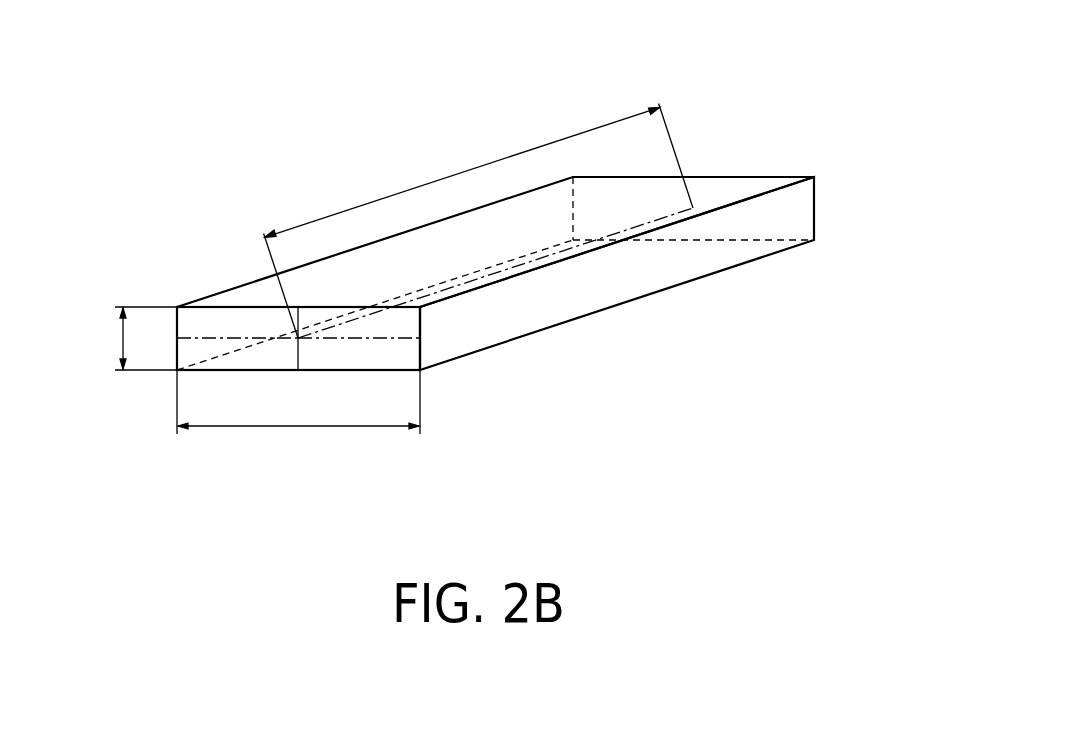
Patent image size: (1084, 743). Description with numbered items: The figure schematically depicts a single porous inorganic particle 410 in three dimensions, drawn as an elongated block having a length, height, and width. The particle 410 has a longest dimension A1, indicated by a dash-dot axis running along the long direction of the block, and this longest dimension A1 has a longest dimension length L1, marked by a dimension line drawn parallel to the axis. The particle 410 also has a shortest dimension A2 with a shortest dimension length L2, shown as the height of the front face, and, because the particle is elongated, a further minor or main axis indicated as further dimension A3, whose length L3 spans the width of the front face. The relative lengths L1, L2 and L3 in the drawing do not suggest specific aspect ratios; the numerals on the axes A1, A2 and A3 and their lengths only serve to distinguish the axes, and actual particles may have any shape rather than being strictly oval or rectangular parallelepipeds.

The particle 410 is at (820, 157).
The longest dimension length L1 is at (457, 176).
The shortest dimension length L2 is at (123, 340).
The further dimension length L3 is at (298, 427).
The longest dimension A1 is at (532, 261).
The shortest dimension A2 is at (298, 352).
The further dimension A3 is at (377, 339).